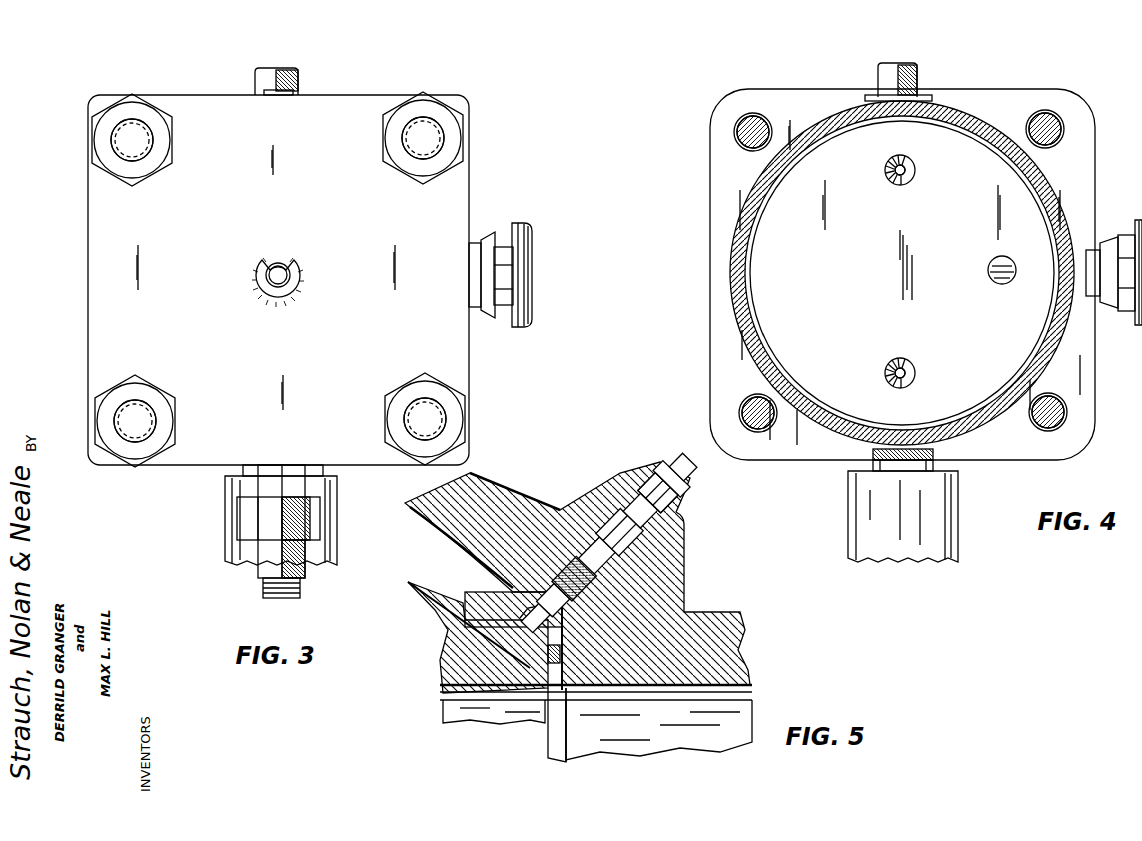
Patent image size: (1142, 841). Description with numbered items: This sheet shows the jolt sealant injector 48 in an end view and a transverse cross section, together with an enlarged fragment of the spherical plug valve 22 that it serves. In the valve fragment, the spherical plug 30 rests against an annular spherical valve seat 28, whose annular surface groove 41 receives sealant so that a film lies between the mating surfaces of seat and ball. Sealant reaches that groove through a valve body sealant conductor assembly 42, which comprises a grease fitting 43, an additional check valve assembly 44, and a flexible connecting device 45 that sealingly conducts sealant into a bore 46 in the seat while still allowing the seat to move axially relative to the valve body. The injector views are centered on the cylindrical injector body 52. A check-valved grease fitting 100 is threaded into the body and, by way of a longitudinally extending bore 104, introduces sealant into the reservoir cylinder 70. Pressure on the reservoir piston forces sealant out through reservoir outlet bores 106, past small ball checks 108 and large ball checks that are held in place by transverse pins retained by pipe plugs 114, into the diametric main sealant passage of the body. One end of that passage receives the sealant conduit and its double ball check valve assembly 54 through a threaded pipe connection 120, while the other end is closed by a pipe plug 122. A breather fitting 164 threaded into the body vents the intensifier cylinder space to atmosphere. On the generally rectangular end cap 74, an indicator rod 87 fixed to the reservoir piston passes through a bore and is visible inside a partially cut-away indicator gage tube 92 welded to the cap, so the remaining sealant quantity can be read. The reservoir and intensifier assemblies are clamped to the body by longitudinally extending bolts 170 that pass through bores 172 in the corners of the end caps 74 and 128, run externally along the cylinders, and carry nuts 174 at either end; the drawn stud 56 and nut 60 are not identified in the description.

In FIG. 5, the spherical plug valve 22 is at (582, 492).
In FIG. 5, the annular spherical valve seat 28 is at (576, 632).
In FIG. 5, the spherical plug 30 is at (432, 605).
In FIG. 5, the annular surface groove 41 is at (520, 655).
In FIG. 5, the valve body sealant conductor assembly 42 is at (652, 577).
In FIG. 5, the grease fitting 43 is at (700, 492).
In FIG. 5, the check valve assembly 44 is at (630, 555).
In FIG. 5, the flexible connecting device 45 is at (508, 588).
In FIG. 5, the bore 46 is at (520, 630).
In FIG. 3, the jolt sealant injector 48 is at (425, 58).
In FIG. 4, the jolt sealant injector 48 is at (757, 60).
In FIG. 4, the injector body 52 is at (923, 226).
In FIG. 3, the double ball check valve assembly 54 is at (340, 512).
In FIG. 4, the double ball check valve assembly 54 is at (962, 512).
In FIG. 3, the stud 56 is at (303, 592).
In FIG. 3, the nut 60 is at (260, 522).
In FIG. 4, the reservoir cylinder 70 is at (1000, 148).
In FIG. 3, the end cap 74 is at (293, 201).
In FIG. 3, the indicator rod 87 is at (276, 268).
In FIG. 3, the indicator gage tube 92 is at (302, 274).
In FIG. 3, the check-valved grease fitting 100 is at (516, 266).
In FIG. 4, the longitudinally extending bore 104 is at (1002, 284).
In FIG. 4, the reservoir outlet bore 106 is at (893, 181).
In FIG. 4, the small ball check 108 is at (913, 169).
In FIG. 3, the pipe plug 114 is at (300, 92).
In FIG. 4, the pipe plug 114 is at (910, 92).
In FIG. 3, the threaded pipe connection 120 is at (245, 470).
In FIG. 4, the threaded pipe connection 120 is at (932, 463).
In FIG. 3, the pipe plug 122 is at (266, 82).
In FIG. 4, the pipe plug 122 is at (890, 68).
In FIG. 4, the end cap 128 is at (815, 97).
In FIG. 3, the breather fitting 164 is at (522, 235).
In FIG. 3, the bolt 170 is at (432, 130).
In FIG. 4, the bolt 170 is at (1065, 130).
In FIG. 4, the bore 172 is at (1055, 122).
In FIG. 3, the nut 174 is at (122, 105).